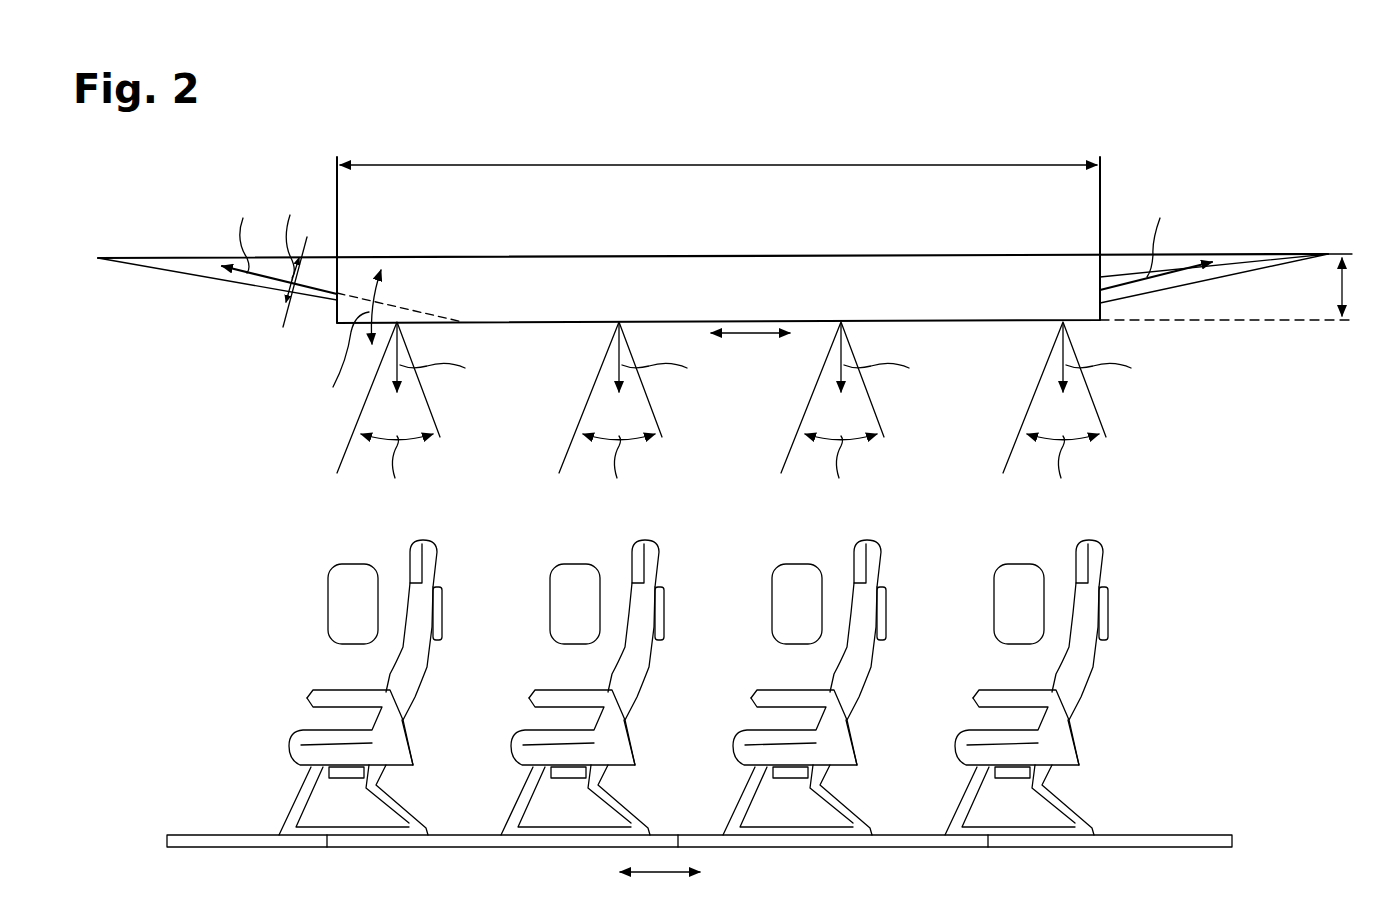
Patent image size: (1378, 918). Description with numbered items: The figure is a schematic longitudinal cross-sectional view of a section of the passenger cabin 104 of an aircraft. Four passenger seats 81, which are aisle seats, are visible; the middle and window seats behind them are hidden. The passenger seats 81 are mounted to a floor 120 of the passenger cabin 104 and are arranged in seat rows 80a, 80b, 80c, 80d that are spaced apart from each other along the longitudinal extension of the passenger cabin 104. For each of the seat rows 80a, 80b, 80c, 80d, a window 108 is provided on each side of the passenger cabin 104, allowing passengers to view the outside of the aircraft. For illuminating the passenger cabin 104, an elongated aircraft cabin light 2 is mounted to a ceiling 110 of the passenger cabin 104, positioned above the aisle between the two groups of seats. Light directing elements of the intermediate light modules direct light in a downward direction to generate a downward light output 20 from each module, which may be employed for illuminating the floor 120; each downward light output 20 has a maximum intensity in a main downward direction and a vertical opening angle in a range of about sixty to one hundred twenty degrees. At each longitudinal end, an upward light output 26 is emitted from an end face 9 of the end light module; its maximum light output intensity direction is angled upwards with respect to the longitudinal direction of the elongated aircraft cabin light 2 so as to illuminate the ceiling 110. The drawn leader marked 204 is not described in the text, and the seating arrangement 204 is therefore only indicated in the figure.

The elongated aircraft cabin light 2 is at (904, 283).
The end face of the end light module 9 is at (325, 326).
The downward light output 20 is at (439, 405).
The upward light output 26 is at (221, 294).
The seat row 80a is at (316, 673).
The seat row 80b is at (538, 673).
The seat row 80c is at (760, 673).
The seat row 80d is at (982, 673).
The passenger seat 81 is at (429, 528).
The passenger cabin 104 is at (1305, 222).
The window 108 is at (338, 590).
The ceiling 110 is at (1259, 254).
The floor 120 is at (1180, 835).
The seat row 204 is at (221, 690).